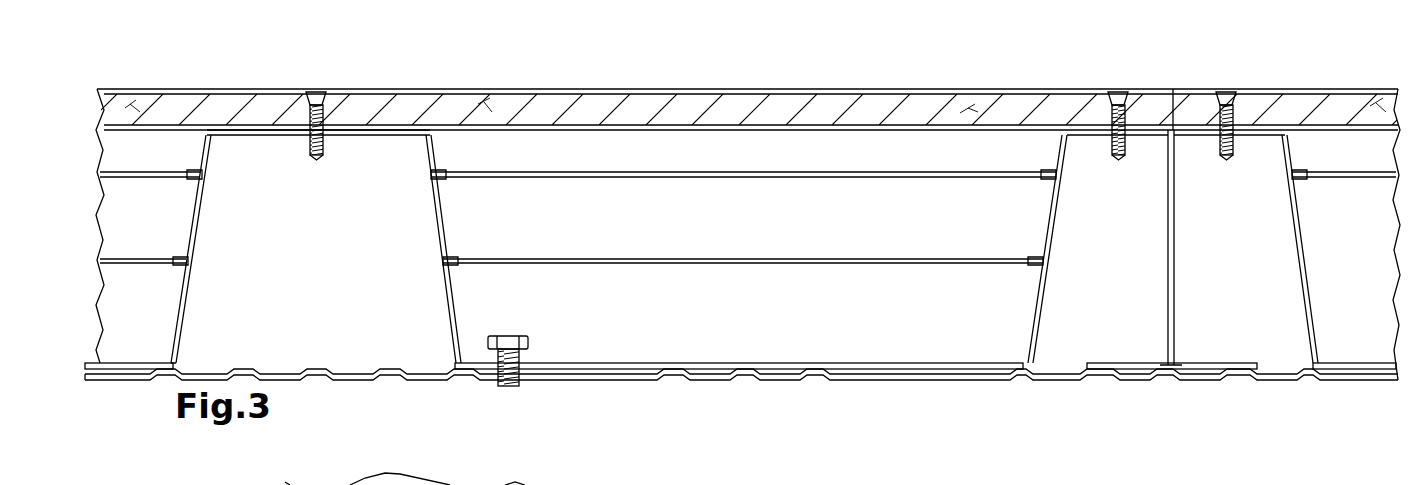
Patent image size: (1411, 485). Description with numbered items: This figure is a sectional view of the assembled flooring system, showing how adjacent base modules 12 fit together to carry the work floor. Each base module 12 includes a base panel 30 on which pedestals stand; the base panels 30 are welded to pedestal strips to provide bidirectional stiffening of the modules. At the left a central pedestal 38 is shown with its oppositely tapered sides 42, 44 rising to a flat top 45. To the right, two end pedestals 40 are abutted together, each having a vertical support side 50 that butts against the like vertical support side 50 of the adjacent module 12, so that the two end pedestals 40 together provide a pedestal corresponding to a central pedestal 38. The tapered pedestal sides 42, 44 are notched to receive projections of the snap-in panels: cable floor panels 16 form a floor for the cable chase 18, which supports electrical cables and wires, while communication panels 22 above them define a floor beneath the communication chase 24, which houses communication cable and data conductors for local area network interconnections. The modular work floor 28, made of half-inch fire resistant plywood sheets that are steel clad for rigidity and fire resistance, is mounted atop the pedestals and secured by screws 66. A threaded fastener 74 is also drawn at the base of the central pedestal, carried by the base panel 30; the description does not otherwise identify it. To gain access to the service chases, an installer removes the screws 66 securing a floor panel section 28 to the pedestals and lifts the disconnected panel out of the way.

The base module 12 is at (577, 403).
The cable floor panel 16 is at (745, 264).
The cable chase 18 is at (707, 241).
The communication panel 22 is at (760, 177).
The communication chase 24 is at (663, 161).
The modular work floor 28 is at (522, 104).
The base panel 30 is at (868, 380).
The central pedestal 38 is at (420, 320).
The end pedestal 40 is at (1058, 323).
The tapered pedestal side 42 is at (195, 229).
The tapered pedestal side 44 is at (432, 240).
The flat top 45 is at (347, 134).
The vertical support side 50 is at (1168, 277).
The screw 66 is at (317, 92).
The bolt 74 is at (506, 337).